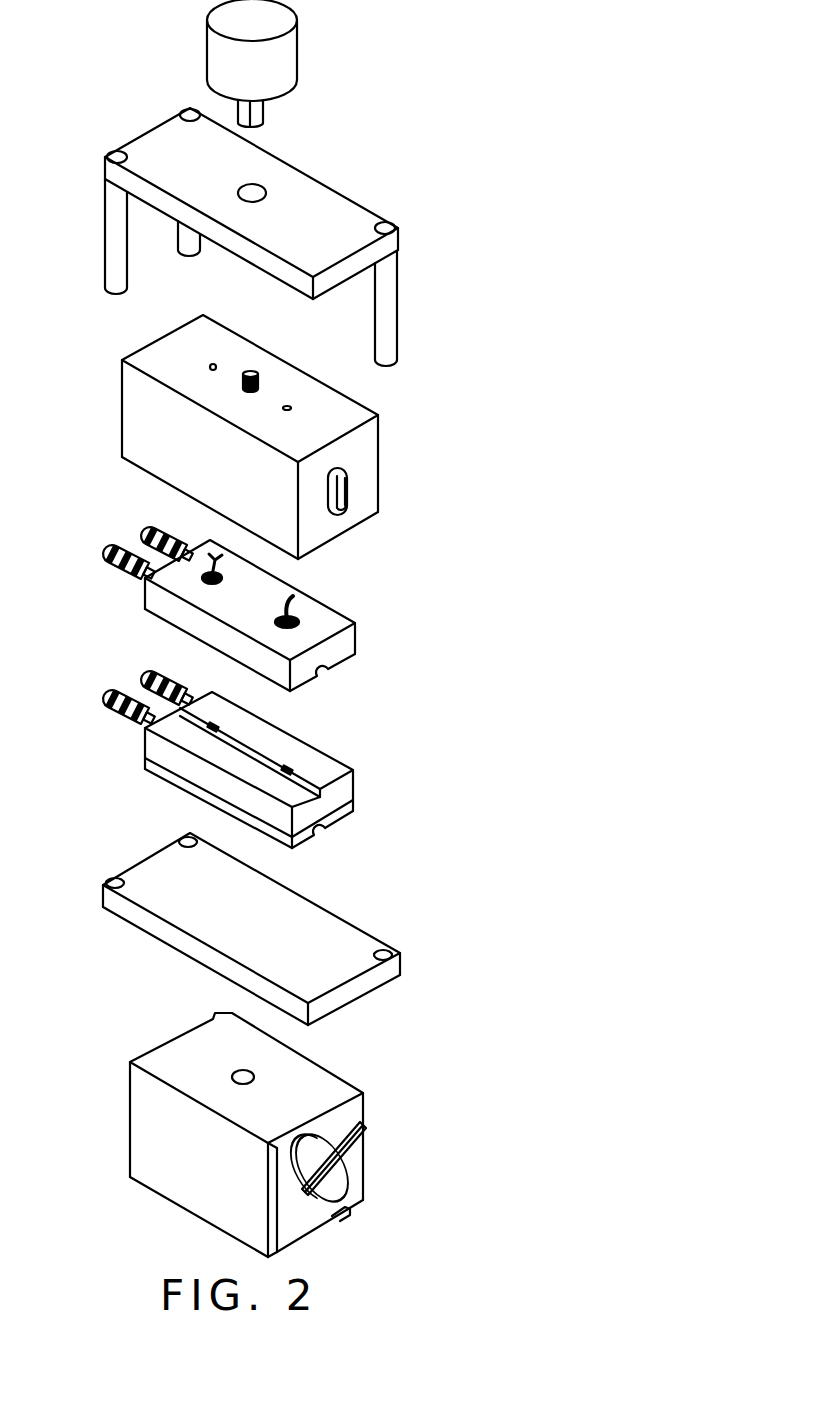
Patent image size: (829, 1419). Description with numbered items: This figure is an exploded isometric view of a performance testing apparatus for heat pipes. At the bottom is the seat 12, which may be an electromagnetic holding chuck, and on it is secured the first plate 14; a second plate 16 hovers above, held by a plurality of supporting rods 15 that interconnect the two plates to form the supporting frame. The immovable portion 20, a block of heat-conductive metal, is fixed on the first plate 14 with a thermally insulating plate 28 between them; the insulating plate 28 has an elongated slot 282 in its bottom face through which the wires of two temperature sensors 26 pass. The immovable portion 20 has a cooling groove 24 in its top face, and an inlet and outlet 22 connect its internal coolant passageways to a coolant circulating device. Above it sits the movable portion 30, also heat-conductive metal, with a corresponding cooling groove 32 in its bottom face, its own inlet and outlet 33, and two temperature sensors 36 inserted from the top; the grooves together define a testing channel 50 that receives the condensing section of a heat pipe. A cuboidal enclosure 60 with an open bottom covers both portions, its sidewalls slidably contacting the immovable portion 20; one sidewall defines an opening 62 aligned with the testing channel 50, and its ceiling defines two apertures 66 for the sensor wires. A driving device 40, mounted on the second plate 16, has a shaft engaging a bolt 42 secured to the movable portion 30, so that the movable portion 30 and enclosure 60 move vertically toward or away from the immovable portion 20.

The seat 12 is at (312, 1080).
The first plate 14 is at (315, 933).
The supporting rods 15 is at (390, 305).
The second plate 16 is at (317, 202).
The immovable portion 20 is at (238, 744).
The inlet and outlet 22 is at (108, 700).
The cooling groove 24 is at (297, 777).
The temperature sensors 26 is at (211, 720).
The thermally insulating plate 28 is at (290, 806).
The elongated slot 282 is at (325, 830).
The movable portion 30 is at (234, 594).
The cooling groove 32 is at (323, 670).
The inlet and outlet 33 is at (110, 562).
The temperature sensors 36 is at (203, 552).
The driving device 40 is at (282, 62).
The bolt 42 is at (250, 370).
The testing channel 50 is at (418, 668).
The cuboidal enclosure 60 is at (279, 435).
The opening 62 is at (343, 488).
The apertures 66 is at (210, 364).